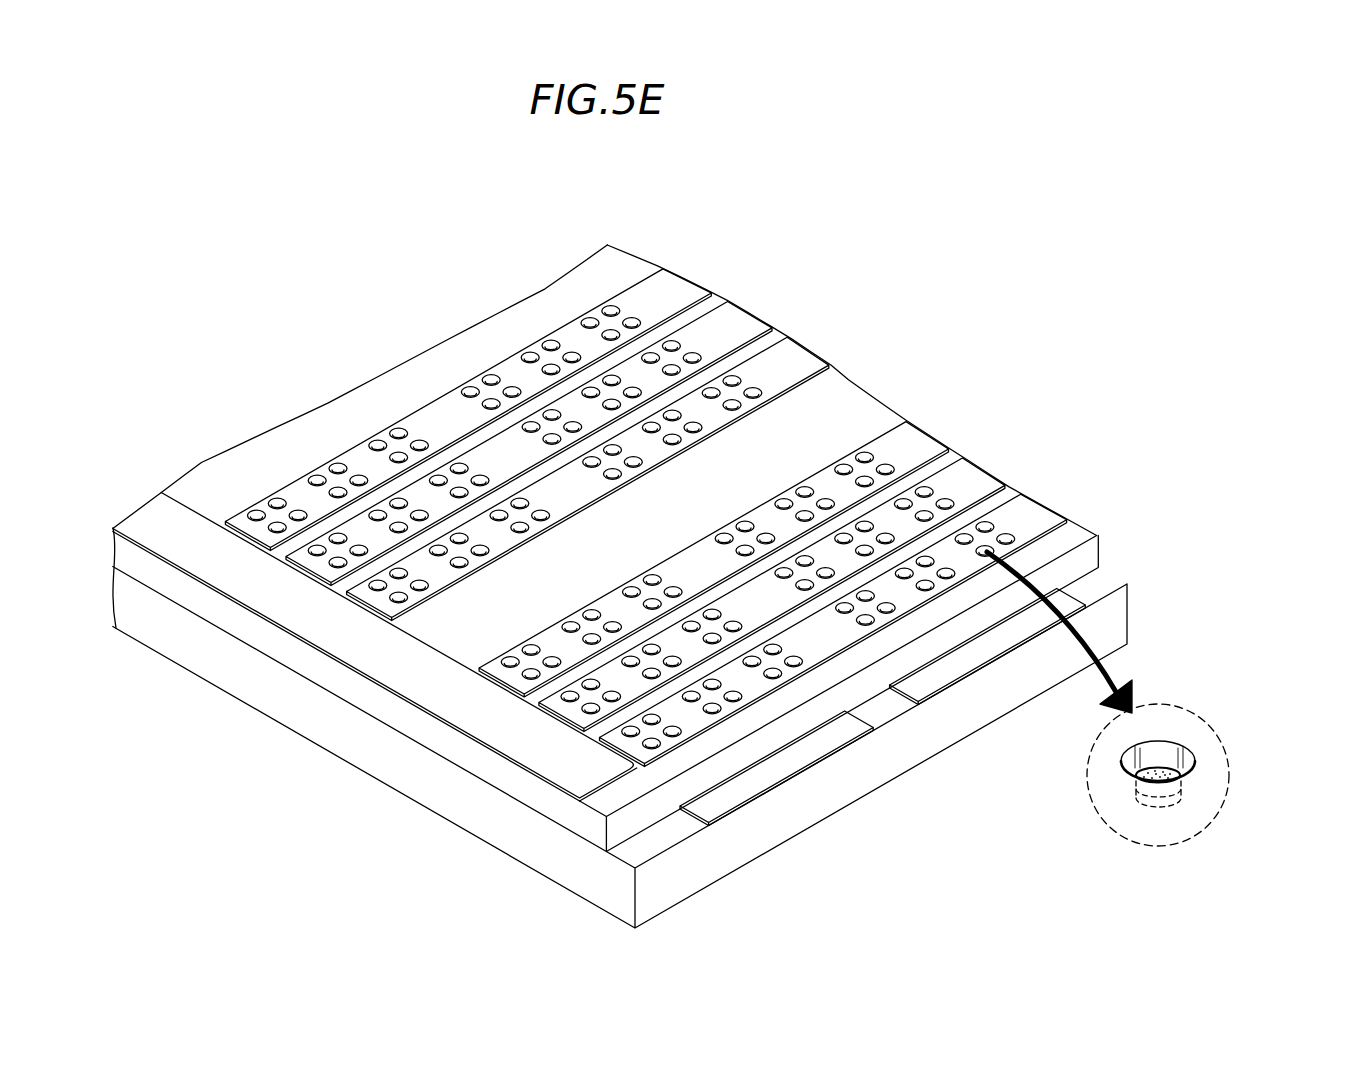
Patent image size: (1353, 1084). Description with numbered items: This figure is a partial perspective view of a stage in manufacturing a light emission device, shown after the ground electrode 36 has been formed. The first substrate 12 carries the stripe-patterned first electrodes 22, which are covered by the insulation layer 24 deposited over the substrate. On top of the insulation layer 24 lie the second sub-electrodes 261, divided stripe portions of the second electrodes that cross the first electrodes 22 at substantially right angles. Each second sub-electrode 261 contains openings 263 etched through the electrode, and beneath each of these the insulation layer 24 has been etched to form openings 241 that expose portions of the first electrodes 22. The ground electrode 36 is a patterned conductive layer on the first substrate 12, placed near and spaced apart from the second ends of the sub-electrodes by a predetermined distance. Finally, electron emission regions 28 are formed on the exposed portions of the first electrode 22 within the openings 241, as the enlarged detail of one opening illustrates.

The first substrate 12 is at (1115, 616).
The insulation layer 24 is at (1083, 556).
The ground electrode 36 is at (387, 662).
The first electrodes 22 is at (934, 681).
The second sub-electrodes 261 is at (562, 492).
The openings of the second electrodes 263 is at (1158, 745).
The openings of the insulation layer 241 is at (1184, 745).
The electron emission regions 28 is at (1135, 775).